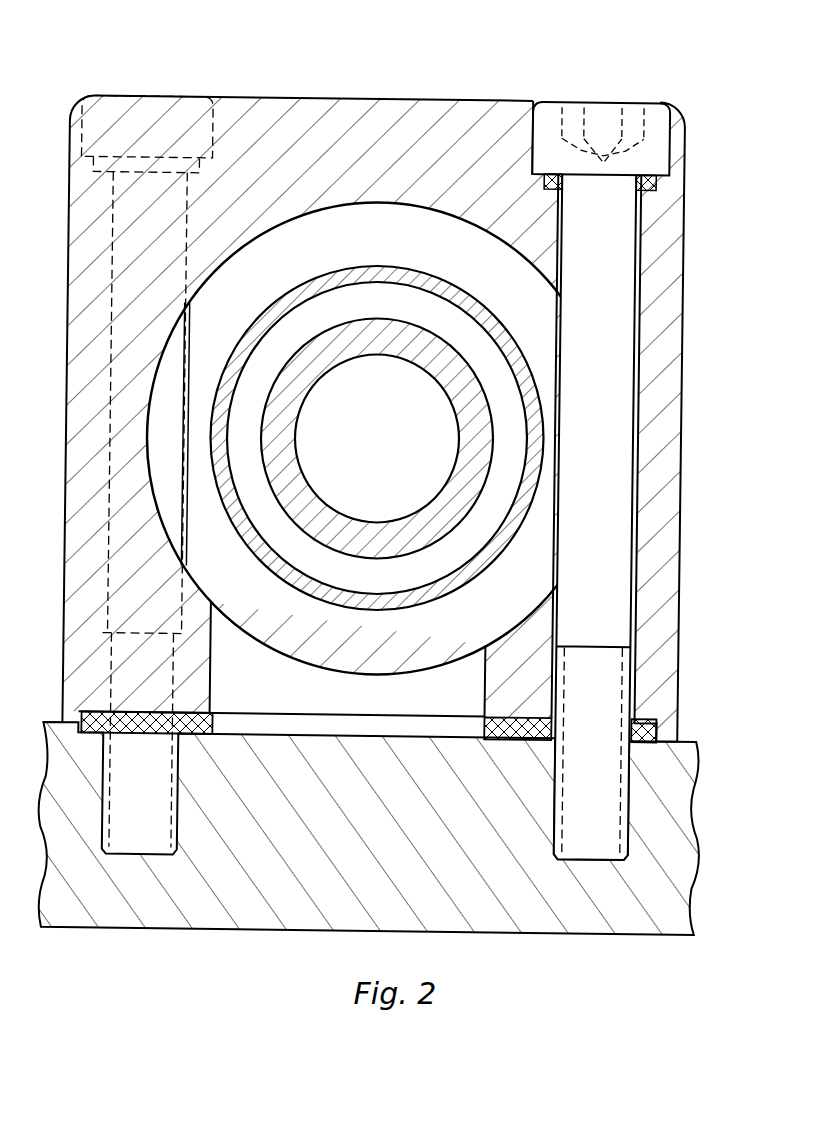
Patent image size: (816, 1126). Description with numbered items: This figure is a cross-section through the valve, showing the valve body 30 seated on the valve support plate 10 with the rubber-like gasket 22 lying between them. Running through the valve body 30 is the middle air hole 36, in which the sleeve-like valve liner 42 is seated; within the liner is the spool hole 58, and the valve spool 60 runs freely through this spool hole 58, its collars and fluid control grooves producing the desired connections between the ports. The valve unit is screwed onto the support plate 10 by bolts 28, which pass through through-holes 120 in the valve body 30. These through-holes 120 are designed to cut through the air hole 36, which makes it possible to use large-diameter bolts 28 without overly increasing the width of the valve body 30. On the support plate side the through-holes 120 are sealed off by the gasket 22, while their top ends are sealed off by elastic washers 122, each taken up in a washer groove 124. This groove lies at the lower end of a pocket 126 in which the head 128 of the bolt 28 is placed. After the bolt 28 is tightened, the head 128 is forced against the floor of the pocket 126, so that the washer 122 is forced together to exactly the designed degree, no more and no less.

The valve support plate 10 is at (244, 875).
The gasket 22 is at (151, 725).
The bolts 28 is at (163, 490).
The valve body 30 is at (258, 130).
The middle air hole 36 is at (386, 200).
The valve liner 42 is at (515, 368).
The spool hole 58 is at (336, 282).
The valve spool 60 is at (390, 352).
The through-holes 120 is at (633, 521).
The elastic washers 122 is at (657, 188).
The washer groove 124 is at (553, 173).
The pocket 126 is at (652, 104).
The head 128 is at (602, 118).